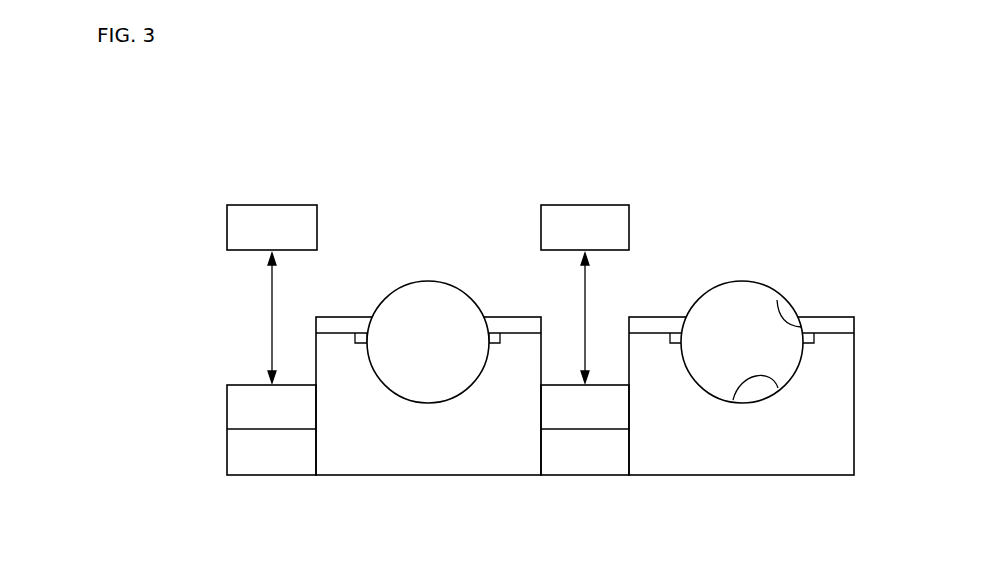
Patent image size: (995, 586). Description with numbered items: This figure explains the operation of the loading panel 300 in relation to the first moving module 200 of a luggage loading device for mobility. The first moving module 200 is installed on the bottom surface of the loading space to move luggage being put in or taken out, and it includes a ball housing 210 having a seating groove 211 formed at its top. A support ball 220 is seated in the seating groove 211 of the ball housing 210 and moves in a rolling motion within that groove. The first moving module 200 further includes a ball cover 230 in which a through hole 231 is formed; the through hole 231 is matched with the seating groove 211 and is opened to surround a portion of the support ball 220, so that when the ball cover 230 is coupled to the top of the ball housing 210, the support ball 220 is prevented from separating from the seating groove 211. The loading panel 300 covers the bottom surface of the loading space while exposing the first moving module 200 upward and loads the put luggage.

The first moving module 200 is at (417, 268).
The ball housing 210 is at (685, 443).
The seating groove 211 is at (733, 400).
The support ball 220 is at (733, 300).
The ball cover 230 is at (837, 325).
The through hole 231 is at (778, 298).
The loading panel 300 is at (268, 217).